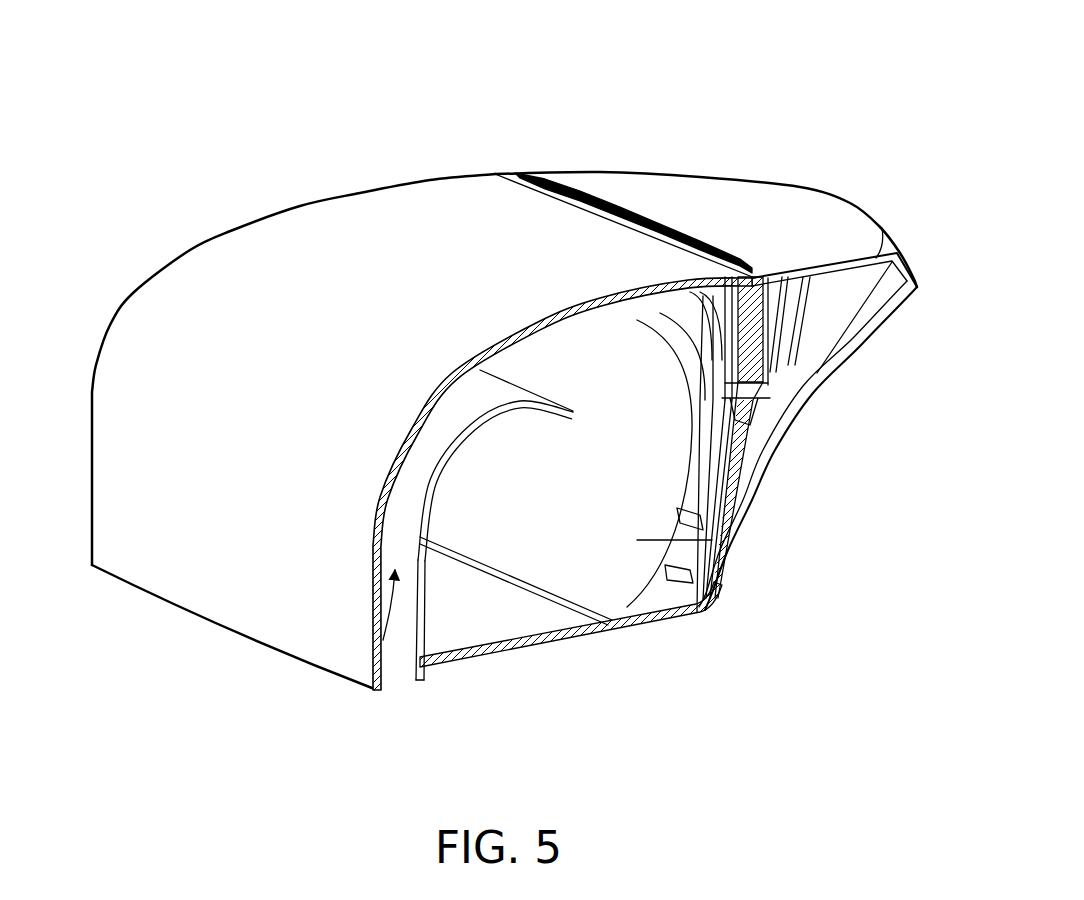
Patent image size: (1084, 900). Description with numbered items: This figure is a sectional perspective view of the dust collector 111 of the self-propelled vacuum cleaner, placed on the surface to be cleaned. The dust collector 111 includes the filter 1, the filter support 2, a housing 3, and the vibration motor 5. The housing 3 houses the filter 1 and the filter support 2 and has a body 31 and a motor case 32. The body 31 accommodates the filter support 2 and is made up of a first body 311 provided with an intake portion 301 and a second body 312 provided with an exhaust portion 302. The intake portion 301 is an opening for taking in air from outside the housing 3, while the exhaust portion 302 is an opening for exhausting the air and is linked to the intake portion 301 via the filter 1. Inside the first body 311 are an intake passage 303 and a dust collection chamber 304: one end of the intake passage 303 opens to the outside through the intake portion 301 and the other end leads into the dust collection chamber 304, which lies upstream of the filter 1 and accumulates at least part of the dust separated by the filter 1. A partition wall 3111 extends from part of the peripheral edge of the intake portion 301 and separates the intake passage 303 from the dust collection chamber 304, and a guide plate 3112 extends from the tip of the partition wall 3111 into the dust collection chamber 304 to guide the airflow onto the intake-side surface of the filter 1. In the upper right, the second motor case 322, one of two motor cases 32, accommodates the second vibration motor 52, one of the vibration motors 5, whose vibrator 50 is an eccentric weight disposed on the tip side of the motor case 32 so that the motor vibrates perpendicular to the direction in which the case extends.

The dust collector 111 is at (124, 199).
The housing 3 is at (217, 228).
The body 31 is at (713, 86).
The first body 311 is at (307, 240).
The second body 312 is at (655, 182).
The second vibration motor 52 is at (748, 310).
The vibration motor 5 is at (746, 338).
The exhaust portion 302 is at (834, 299).
The vibrator 50 is at (798, 378).
The second motor case 322 is at (755, 440).
The motor case 32 is at (790, 324).
The filter support 2 is at (738, 510).
The filter 1 is at (732, 560).
The intake passage 303 is at (378, 635).
The intake portion 301 is at (388, 690).
The partition wall 3111 is at (425, 637).
The dust collection chamber 304 is at (480, 600).
The guide plate 3112 is at (520, 415).